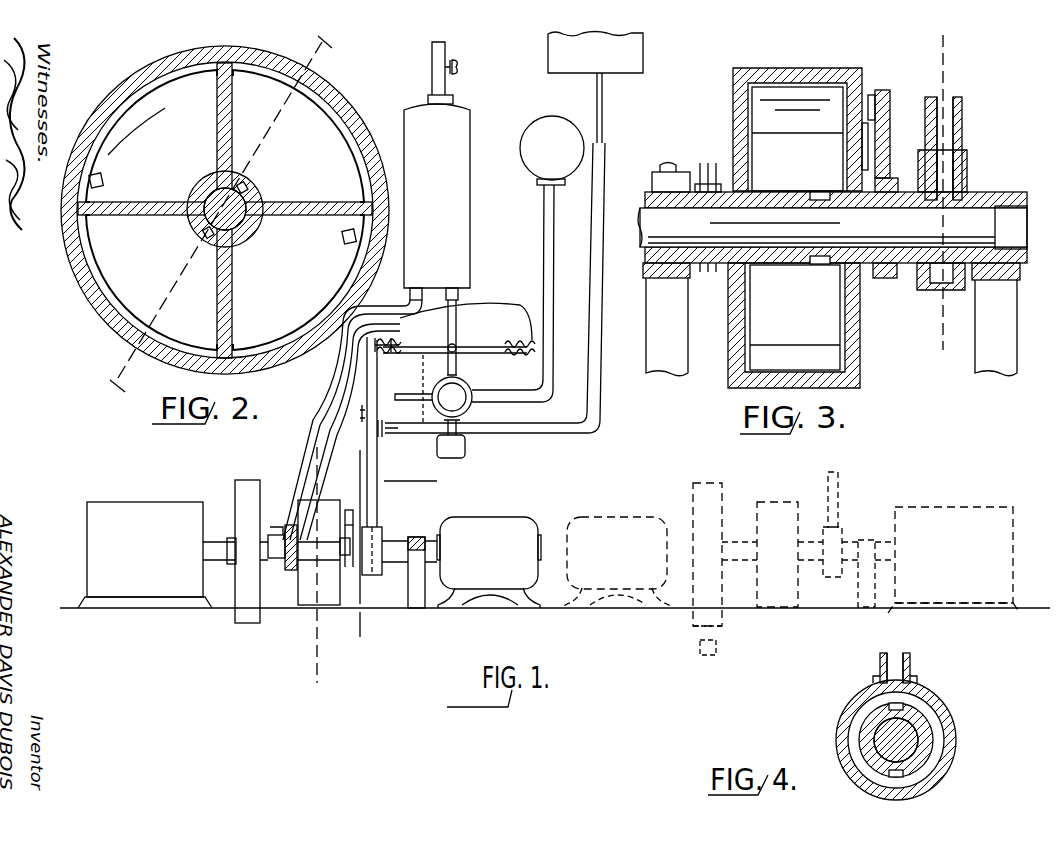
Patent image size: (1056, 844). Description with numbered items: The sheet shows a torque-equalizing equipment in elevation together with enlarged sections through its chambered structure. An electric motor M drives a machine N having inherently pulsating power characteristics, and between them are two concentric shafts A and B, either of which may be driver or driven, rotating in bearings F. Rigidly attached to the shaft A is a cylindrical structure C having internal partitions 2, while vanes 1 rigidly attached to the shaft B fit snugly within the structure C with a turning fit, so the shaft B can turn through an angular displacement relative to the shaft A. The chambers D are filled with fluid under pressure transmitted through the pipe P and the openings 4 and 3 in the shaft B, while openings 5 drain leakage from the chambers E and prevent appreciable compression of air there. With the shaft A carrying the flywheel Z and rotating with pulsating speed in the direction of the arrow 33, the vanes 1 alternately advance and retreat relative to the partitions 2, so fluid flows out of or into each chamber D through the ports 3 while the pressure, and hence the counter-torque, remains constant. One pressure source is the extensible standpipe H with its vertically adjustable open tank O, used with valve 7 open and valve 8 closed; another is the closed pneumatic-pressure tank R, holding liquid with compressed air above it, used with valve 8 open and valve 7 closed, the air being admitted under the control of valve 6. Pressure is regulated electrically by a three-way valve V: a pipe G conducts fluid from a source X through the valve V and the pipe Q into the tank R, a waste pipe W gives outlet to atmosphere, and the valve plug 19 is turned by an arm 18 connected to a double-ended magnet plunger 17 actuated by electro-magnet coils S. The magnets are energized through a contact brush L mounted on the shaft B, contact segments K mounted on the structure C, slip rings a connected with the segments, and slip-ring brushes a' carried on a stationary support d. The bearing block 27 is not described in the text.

In FIG. 2, the vanes 1 is at (240, 118).
In FIG. 3, the vanes 1 is at (795, 317).
In FIG. 2, the internal partitions 2 is at (140, 212).
In FIG. 1, the internal partitions 2 is at (308, 673).
In FIG. 3, the internal partitions 2 is at (797, 139).
In FIG. 2, the openings (ports) 3 is at (322, 42).
In FIG. 3, the openings (ports) 3 is at (820, 280).
In FIG. 4, the openings (ports) 3 is at (965, 778).
In FIG. 1, the openings 4 is at (380, 490).
In FIG. 3, the openings 4 is at (912, 340).
In FIG. 4, the openings 4 is at (830, 770).
In FIG. 2, the openings 5 is at (104, 183).
In FIG. 1, the openings 5 is at (362, 472).
In FIG. 1, the valve 6 is at (460, 67).
In FIG. 1, the valve 7 is at (388, 436).
In FIG. 1, the valve 8 is at (356, 418).
In FIG. 1, the double-ended magnet plunger 17 is at (455, 346).
In FIG. 1, the arm 18 is at (470, 386).
In FIG. 1, the valve plug 19 is at (465, 405).
In FIG. 1, the bearing block 27 is at (368, 575).
In FIG. 3, the bearing block 27 is at (925, 288).
In FIG. 4, the bearing block 27 is at (840, 706).
In FIG. 2, the arrow 33 is at (162, 114).
In FIG. 2, the shaft A is at (234, 206).
In FIG. 1, the shaft A is at (215, 555).
In FIG. 3, the shaft A is at (832, 227).
In FIG. 4, the shaft A is at (916, 733).
In FIG. 2, the shaft B is at (255, 228).
In FIG. 1, the shaft B is at (397, 505).
In FIG. 3, the shaft B is at (790, 270).
In FIG. 4, the shaft B is at (862, 742).
In FIG. 2, the cylindrical structure C is at (320, 90).
In FIG. 1, the cylindrical structure C is at (790, 490).
In FIG. 3, the cylindrical structure C is at (858, 370).
In FIG. 2, the chambers D is at (225, 210).
In FIG. 2, the chambers E is at (225, 210).
In FIG. 1, the bearings F is at (418, 598).
In FIG. 3, the bearings F is at (831, 319).
In FIG. 1, the pipe G is at (542, 224).
In FIG. 1, the extensible standpipe H is at (603, 105).
In FIG. 1, the contact segments K is at (340, 546).
In FIG. 3, the contact segments K is at (862, 140).
In FIG. 1, the contact brush L is at (354, 516).
In FIG. 3, the contact brush L is at (886, 92).
In FIG. 1, the electric motor M is at (553, 562).
In FIG. 1, the driven machine N is at (549, 557).
In FIG. 1, the open tank O is at (595, 53).
In FIG. 1, the pipe P is at (876, 468).
In FIG. 3, the pipe P is at (962, 130).
In FIG. 4, the pipe P is at (910, 665).
In FIG. 1, the pipe Q is at (458, 300).
In FIG. 1, the pneumatic-pressure tank R is at (437, 171).
In FIG. 1, the electro-magnets (magnet coils) S is at (376, 356).
In FIG. 1, the three-way valve V is at (460, 404).
In FIG. 1, the waste pipe W is at (395, 396).
In FIG. 1, the source of fluid X is at (552, 150).
In FIG. 1, the flywheel Z is at (230, 606).
In FIG. 1, the slip ring a is at (271, 582).
In FIG. 3, the slip ring a is at (711, 276).
In FIG. 1, the slip-ring brush a' is at (328, 505).
In FIG. 3, the slip-ring brush a' is at (706, 162).
In FIG. 1, the stationary support d is at (280, 532).
In FIG. 3, the stationary support d is at (676, 170).